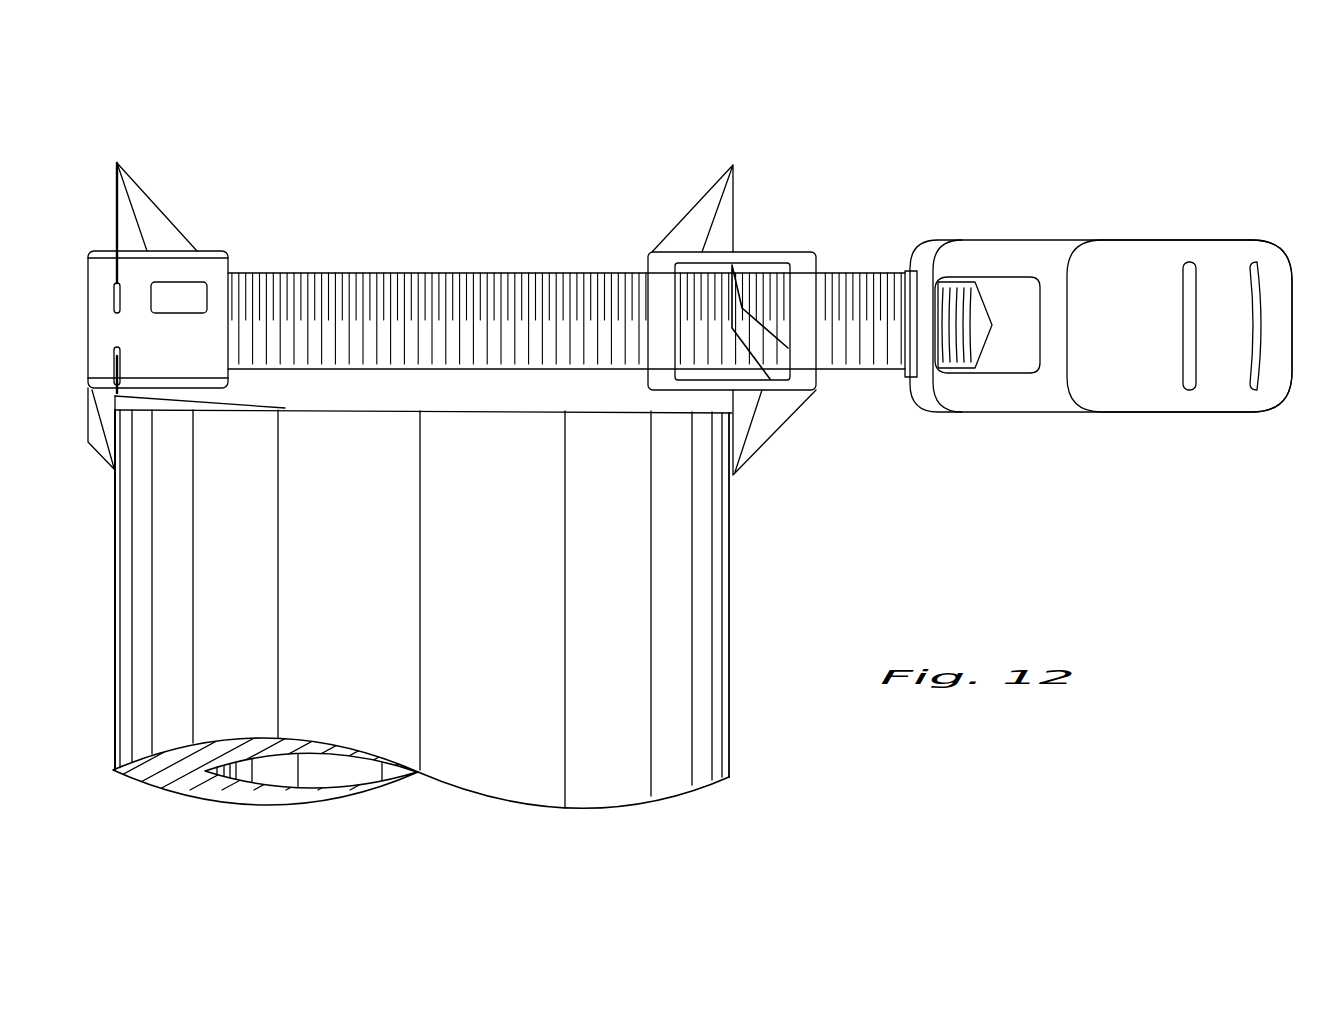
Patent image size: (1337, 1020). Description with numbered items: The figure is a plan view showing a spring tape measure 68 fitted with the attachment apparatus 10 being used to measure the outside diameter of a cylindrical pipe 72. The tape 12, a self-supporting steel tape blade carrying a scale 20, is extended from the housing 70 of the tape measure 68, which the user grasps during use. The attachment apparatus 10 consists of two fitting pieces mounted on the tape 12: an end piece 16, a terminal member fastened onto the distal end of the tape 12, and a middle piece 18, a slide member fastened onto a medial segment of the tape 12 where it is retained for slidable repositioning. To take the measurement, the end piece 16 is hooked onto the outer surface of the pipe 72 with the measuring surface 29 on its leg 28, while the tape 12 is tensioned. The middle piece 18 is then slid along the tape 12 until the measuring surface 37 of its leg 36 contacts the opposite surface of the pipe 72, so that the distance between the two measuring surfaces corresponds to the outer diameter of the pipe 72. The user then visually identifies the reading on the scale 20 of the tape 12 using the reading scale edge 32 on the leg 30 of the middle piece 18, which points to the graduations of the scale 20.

The attachment apparatus 10 is at (206, 107).
The tape 12 is at (483, 272).
The end piece 16 is at (175, 190).
The middle piece 18 is at (824, 416).
The scale 20 is at (388, 345).
The leg 28 is at (96, 462).
The measuring surface 29 is at (120, 397).
The leg 30 is at (747, 289).
The reading scale edge 32 is at (736, 305).
The leg 36 is at (775, 446).
The measuring surface 37 is at (718, 402).
The spring tape measure 68 is at (1108, 427).
The housing 70 is at (1155, 413).
The cylindrical pipe 72 is at (503, 629).